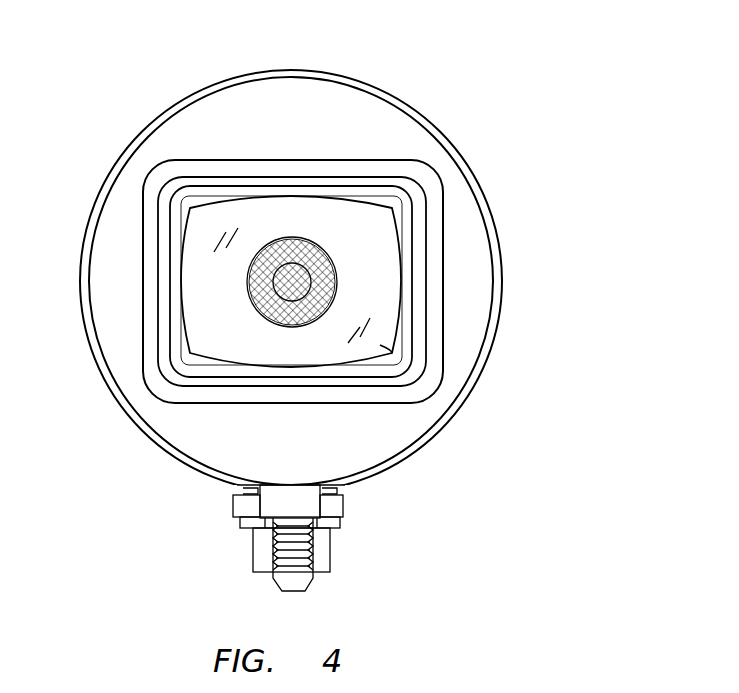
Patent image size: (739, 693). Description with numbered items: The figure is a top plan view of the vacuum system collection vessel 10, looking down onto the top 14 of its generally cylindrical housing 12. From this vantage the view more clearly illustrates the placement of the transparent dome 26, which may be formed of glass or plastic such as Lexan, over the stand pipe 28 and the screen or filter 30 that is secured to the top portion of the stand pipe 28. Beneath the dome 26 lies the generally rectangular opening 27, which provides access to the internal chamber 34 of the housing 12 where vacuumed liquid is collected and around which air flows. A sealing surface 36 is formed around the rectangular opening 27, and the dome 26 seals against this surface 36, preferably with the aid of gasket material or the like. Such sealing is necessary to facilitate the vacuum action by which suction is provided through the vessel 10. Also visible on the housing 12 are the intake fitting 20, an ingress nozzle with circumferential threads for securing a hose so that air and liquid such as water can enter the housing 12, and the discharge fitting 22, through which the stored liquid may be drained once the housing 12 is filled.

The vacuum system collection vessel 10 is at (560, 150).
The housing 12 is at (410, 103).
The top 14 is at (462, 362).
The intake fitting 20 is at (313, 567).
The discharge fitting 22 is at (260, 553).
The transparent dome 26 is at (343, 213).
The rectangular opening 27 is at (392, 355).
The stand pipe 28 is at (226, 285).
The filter 30 is at (268, 249).
The inner chamber 34 is at (206, 344).
The sealing surface 36 is at (418, 295).